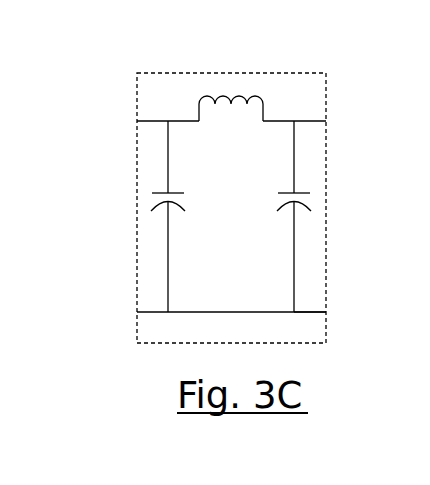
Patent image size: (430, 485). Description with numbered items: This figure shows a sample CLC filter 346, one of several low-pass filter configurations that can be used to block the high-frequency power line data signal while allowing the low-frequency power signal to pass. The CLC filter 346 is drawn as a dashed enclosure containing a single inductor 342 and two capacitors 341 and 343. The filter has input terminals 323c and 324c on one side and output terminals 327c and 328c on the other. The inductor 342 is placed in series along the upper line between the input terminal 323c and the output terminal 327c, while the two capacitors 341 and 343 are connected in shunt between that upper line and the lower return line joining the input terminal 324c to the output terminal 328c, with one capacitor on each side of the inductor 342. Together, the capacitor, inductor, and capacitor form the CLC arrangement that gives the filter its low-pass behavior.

The CLC filter 346 is at (232, 65).
The input terminal 323c is at (333, 119).
The output terminal 327c is at (129, 120).
The inductor 342 is at (248, 127).
The capacitor 341 is at (182, 215).
The capacitor 343 is at (279, 199).
The output terminal 328c is at (128, 312).
The input terminal 324c is at (332, 313).